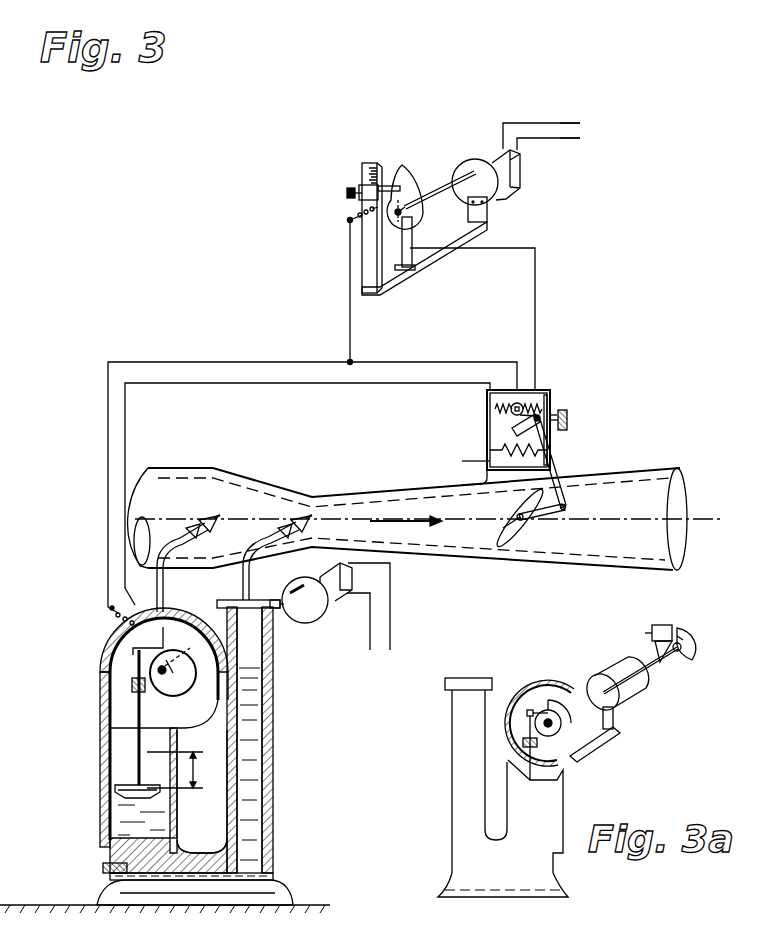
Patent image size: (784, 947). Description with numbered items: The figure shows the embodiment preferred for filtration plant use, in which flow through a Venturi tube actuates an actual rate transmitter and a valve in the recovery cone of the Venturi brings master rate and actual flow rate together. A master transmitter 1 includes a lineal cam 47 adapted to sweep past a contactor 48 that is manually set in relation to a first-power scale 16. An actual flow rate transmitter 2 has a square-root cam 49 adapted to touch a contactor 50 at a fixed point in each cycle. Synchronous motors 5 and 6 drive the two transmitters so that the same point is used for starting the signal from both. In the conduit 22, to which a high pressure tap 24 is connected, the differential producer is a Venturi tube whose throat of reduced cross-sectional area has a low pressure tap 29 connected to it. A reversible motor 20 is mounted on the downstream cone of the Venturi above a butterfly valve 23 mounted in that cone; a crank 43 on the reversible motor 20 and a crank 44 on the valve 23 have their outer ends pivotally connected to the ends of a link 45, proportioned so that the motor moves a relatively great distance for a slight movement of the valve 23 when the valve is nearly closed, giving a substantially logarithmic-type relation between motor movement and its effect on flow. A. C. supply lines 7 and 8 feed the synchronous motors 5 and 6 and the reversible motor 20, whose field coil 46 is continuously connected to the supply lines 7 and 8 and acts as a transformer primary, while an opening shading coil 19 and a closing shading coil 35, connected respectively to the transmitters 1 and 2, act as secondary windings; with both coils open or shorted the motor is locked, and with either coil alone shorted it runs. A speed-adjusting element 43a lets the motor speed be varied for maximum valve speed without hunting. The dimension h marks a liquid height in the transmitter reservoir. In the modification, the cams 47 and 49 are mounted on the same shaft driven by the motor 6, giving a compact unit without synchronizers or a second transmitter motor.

In FIG. 3, the master transmitter 1 is at (290, 197).
In FIG. 3, the actual flow rate transmitter 2 is at (310, 754).
In FIG. 3, the synchronous motor 5 is at (494, 143).
In FIG. 3, the synchronous motor 6 is at (311, 599).
In FIG. 3A, the synchronous motor 6 is at (628, 703).
In FIG. 3, the A. C. supply line 7 is at (569, 122).
In FIG. 3, the A. C. supply line 8 is at (568, 140).
In FIG. 3, the first-power scale 16 is at (357, 183).
In FIG. 3, the opening shading coil 19 is at (538, 397).
In FIG. 3, the reversible motor 20 is at (510, 388).
In FIG. 3, the conduit 22 is at (175, 467).
In FIG. 3, the butterfly valve 23 is at (503, 528).
In FIG. 3, the high pressure tap 24 is at (212, 514).
In FIG. 3, the low pressure tap 29 is at (303, 515).
In FIG. 3, the closing shading coil 35 is at (498, 410).
In FIG. 3, the crank 43 is at (568, 424).
In FIG. 3, the speed-adjusting element 43a is at (565, 405).
In FIG. 3, the crank 44 is at (543, 522).
In FIG. 3, the link 45 is at (552, 468).
In FIG. 3, the field coil 46 is at (511, 455).
In FIG. 3, the lineal cam 47 is at (411, 188).
In FIG. 3A, the lineal cam 47 is at (698, 644).
In FIG. 3, the contactor 48 is at (390, 185).
In FIG. 3A, the contactor 48 is at (670, 626).
In FIG. 3, the square-root cam 49 is at (168, 692).
In FIG. 3A, the square-root cam 49 is at (547, 712).
In FIG. 3, the contactor 50 is at (133, 652).
In FIG. 3A, the contactor 50 is at (528, 711).
In FIG. 3, the liquid height h is at (177, 770).